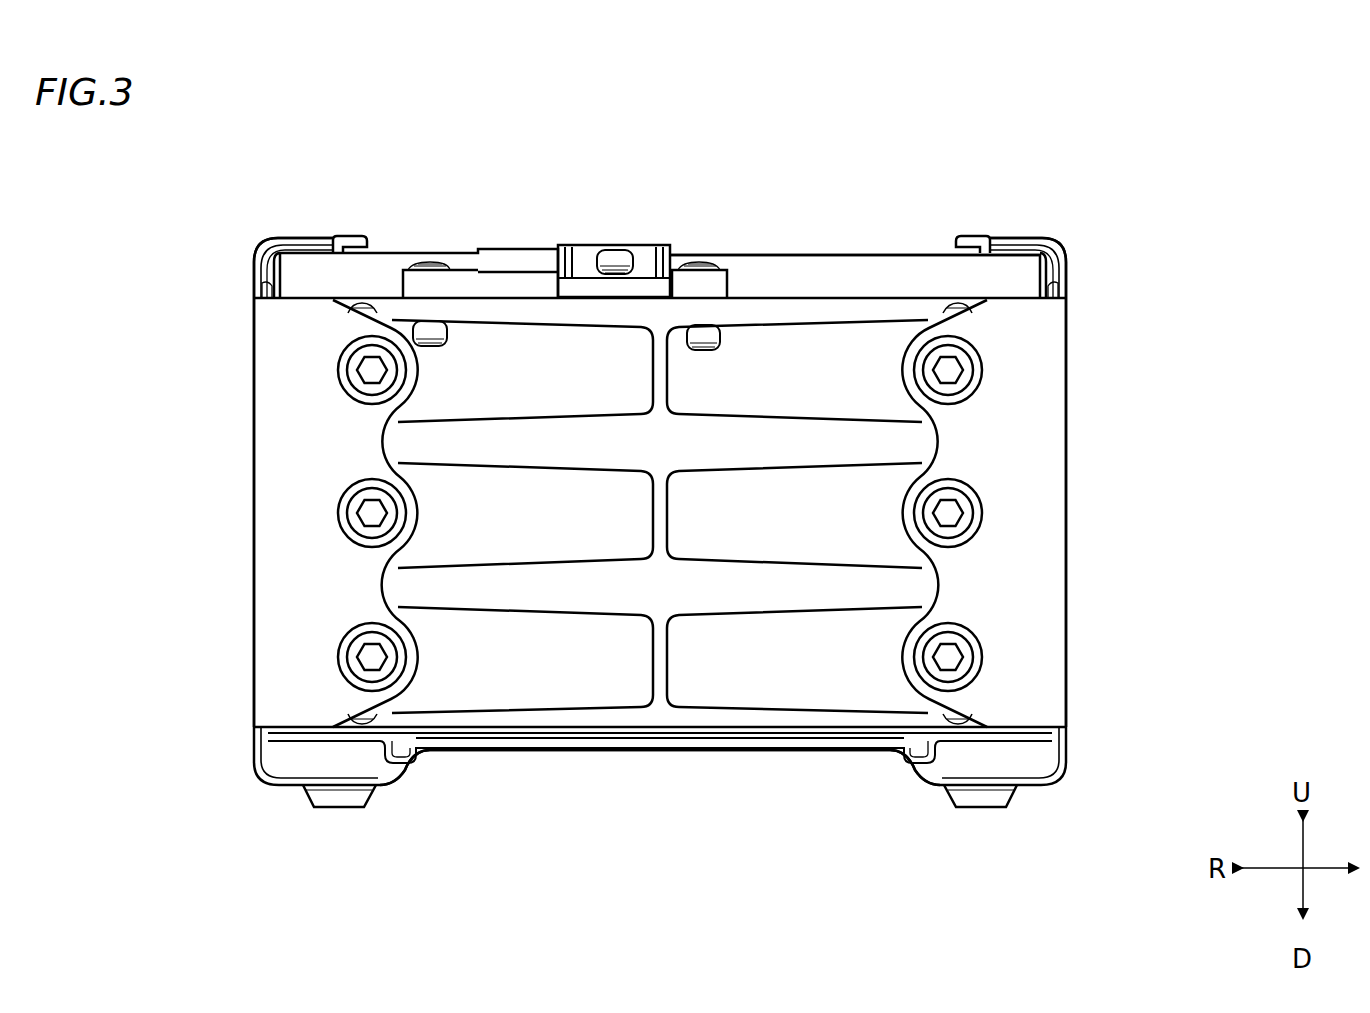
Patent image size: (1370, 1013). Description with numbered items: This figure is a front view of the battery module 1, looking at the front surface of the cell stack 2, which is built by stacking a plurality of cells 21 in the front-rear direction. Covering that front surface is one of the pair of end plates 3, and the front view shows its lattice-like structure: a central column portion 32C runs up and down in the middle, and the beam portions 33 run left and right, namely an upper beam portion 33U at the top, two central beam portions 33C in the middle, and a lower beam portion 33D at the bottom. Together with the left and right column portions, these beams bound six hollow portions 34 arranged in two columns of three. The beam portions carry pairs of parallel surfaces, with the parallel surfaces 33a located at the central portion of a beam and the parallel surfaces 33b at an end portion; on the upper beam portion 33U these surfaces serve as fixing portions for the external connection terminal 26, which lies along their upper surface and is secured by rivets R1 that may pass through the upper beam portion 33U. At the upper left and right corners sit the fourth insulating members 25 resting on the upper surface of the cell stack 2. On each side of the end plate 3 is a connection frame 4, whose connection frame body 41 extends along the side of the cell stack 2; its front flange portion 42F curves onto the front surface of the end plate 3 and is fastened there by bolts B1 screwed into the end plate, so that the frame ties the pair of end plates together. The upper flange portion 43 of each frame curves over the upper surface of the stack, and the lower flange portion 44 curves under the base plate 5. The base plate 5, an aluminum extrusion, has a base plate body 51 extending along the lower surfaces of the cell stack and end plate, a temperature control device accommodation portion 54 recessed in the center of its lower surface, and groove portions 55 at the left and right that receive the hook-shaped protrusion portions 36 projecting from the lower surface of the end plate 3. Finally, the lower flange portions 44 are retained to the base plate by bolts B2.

The battery module 1 is at (905, 138).
The cell stack 2 is at (660, 215).
The cell 21 is at (793, 250).
The end plate 3 is at (660, 535).
The beam portion 33 is at (660, 535).
The upper beam portion 33U is at (846, 292).
The central beam portion 33C is at (813, 613).
The lower beam portion 33D is at (760, 720).
The parallel surface 33a is at (708, 326).
The parallel surface 33b is at (420, 321).
The central column portion 32C is at (667, 660).
The hollow portion 34 is at (802, 675).
The connection frame 4 is at (662, 482).
The connection frame body 41 is at (254, 655).
The front flange portion 42F is at (277, 588).
The upper flange portion 43 is at (287, 238).
The lower flange portion 44 is at (659, 844).
The base plate 5 is at (660, 797).
The base plate body 51 is at (497, 750).
The temperature control device accommodation portion 54 is at (434, 752).
The groove portion 55 is at (390, 765).
The protrusion portion 36 is at (660, 833).
The fourth insulating member 25 is at (350, 236).
The external connection terminal 26 is at (592, 250).
The rivet R1 is at (430, 268).
The bolt B1 is at (368, 655).
The bolt B2 is at (293, 788).